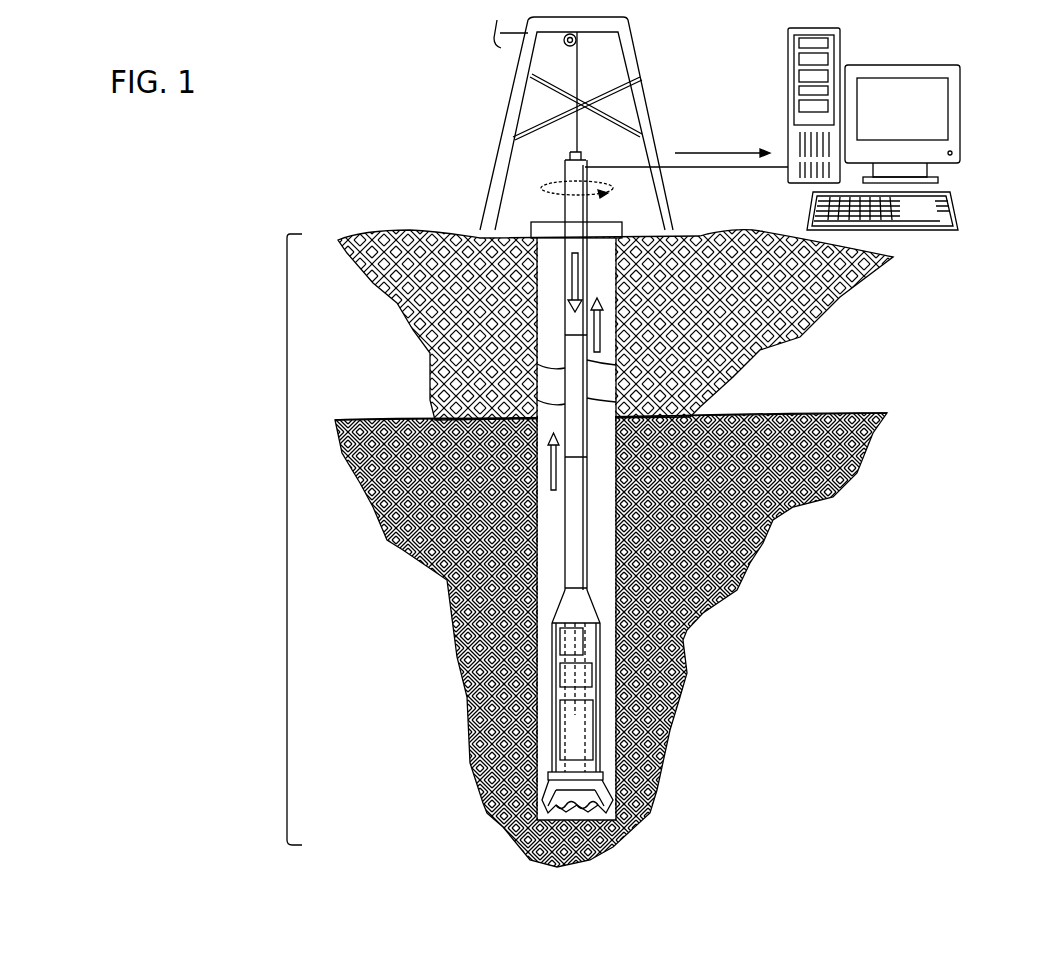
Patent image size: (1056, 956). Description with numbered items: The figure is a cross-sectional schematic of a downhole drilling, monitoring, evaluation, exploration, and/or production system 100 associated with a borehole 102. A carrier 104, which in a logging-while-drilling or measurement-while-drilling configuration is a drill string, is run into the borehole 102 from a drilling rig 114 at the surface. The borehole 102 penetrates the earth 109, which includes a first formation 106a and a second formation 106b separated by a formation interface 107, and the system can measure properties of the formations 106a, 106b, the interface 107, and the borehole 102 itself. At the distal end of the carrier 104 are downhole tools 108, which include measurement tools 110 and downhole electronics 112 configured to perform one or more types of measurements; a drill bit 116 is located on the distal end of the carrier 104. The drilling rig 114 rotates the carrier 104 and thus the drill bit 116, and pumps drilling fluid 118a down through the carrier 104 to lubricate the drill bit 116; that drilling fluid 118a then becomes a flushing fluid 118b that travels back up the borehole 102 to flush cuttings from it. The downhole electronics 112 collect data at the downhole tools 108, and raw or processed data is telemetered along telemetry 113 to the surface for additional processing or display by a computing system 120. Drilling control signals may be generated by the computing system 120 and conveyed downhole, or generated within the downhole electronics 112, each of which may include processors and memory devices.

The downhole drilling, monitoring, evaluation, exploration, and/or production system 100 is at (443, 143).
The borehole 102 is at (543, 338).
The carrier 104 is at (542, 396).
The first formation 106a is at (615, 325).
The second formation 106b is at (611, 640).
The formation interface 107 is at (402, 418).
The downhole tools 108 is at (572, 681).
The earth 109 is at (287, 540).
The measurement tools 110 is at (593, 719).
The downhole electronics 112 is at (557, 642).
The telemetry 113 is at (582, 555).
The drilling rig 114 is at (655, 135).
The drill bit 116 is at (548, 787).
The drilling fluid 118a is at (571, 290).
The flushing fluid 118b is at (602, 336).
The computing system 120 is at (960, 134).